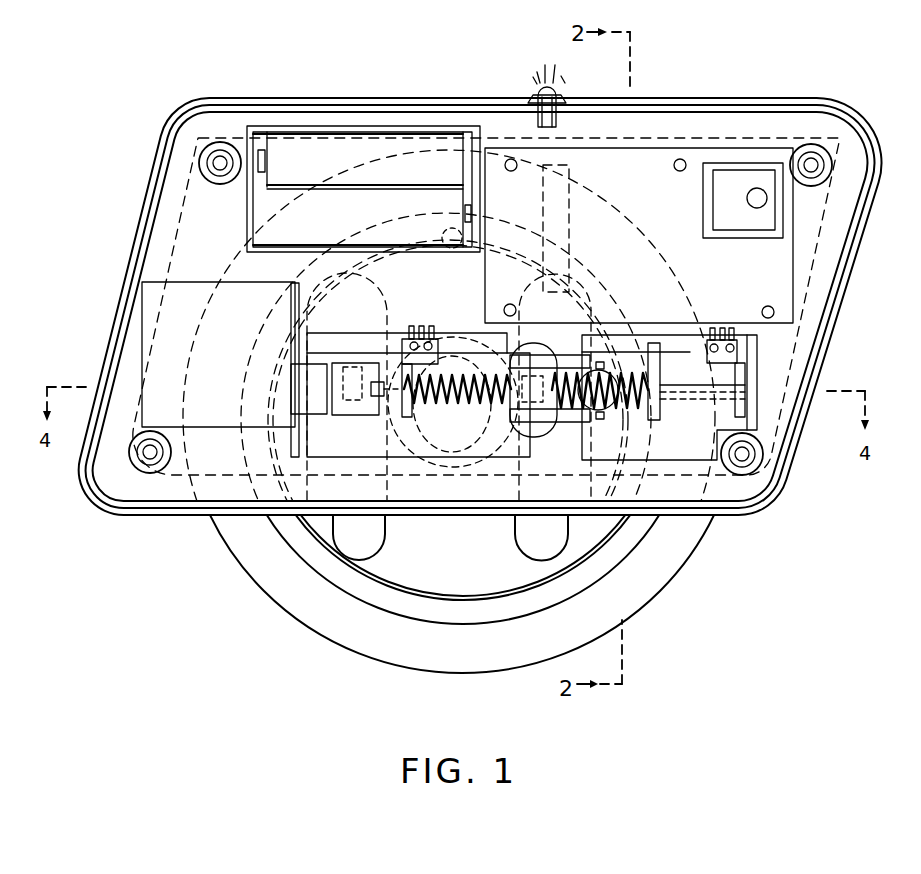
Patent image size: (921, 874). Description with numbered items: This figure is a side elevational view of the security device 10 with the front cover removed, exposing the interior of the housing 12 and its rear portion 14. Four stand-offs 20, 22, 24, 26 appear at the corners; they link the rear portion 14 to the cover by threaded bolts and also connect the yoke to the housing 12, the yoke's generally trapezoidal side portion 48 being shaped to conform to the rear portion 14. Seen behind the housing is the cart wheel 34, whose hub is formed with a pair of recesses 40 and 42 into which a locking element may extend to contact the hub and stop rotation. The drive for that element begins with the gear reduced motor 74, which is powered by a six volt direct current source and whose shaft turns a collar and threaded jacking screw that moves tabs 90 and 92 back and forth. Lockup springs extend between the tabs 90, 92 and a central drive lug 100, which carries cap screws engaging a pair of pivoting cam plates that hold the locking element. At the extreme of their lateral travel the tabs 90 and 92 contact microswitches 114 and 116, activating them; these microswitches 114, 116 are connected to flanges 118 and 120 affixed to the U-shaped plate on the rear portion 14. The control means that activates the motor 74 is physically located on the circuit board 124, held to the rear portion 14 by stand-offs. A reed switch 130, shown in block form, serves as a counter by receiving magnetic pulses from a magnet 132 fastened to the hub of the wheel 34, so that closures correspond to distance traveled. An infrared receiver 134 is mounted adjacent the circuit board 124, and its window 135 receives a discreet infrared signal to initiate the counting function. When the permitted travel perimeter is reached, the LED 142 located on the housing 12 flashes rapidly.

The security device 10 is at (768, 70).
The housing 12 is at (495, 403).
The rear portion 14 is at (480, 306).
The stand-off 20 is at (818, 160).
The stand-off 22 is at (771, 489).
The stand-off 24 is at (118, 487).
The stand-off 26 is at (207, 155).
The wheel 34 is at (462, 397).
The recess 40 is at (282, 441).
The recess 42 is at (603, 446).
The side portion 48 is at (172, 237).
The gear reduced motor 74 is at (140, 352).
The tab 90 is at (457, 461).
The tab 92 is at (676, 393).
The central drive lug 100 is at (565, 333).
The microswitch 114 is at (420, 349).
The microswitch 116 is at (741, 346).
The flange 118 is at (410, 370).
The flange 120 is at (745, 347).
The circuit board 124 is at (639, 196).
The reed switch 130 is at (569, 177).
The magnet 132 is at (440, 230).
The infrared receiver 134 is at (786, 144).
The window 135 is at (762, 217).
The LED 142 is at (539, 56).